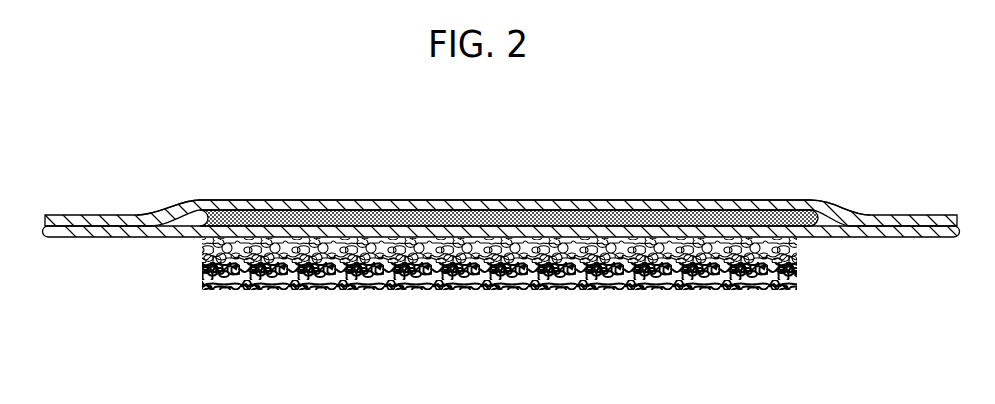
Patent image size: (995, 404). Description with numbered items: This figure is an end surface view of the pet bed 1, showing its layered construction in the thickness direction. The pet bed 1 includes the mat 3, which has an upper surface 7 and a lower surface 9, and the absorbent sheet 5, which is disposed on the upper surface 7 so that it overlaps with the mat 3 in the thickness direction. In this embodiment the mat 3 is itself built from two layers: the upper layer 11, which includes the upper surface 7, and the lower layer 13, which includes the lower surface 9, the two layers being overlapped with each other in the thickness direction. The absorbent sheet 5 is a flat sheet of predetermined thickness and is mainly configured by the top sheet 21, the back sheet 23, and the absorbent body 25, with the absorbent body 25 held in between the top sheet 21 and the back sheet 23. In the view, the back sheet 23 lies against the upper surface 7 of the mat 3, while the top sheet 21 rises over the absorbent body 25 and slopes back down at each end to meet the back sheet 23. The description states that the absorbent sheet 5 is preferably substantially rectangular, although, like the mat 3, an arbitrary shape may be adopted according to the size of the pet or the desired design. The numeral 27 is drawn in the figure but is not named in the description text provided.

The pet bed 1 is at (797, 98).
The mat 3 is at (883, 248).
The absorbent sheet 5 is at (834, 210).
The upper surface 7 is at (200, 238).
The lower surface 9 is at (302, 290).
The upper layer 11 is at (797, 250).
The lower layer 13 is at (797, 282).
The top sheet 21 is at (185, 201).
The back sheet 23 is at (90, 219).
The absorbent body 25 is at (236, 221).
The covering layer 27 is at (355, 218).